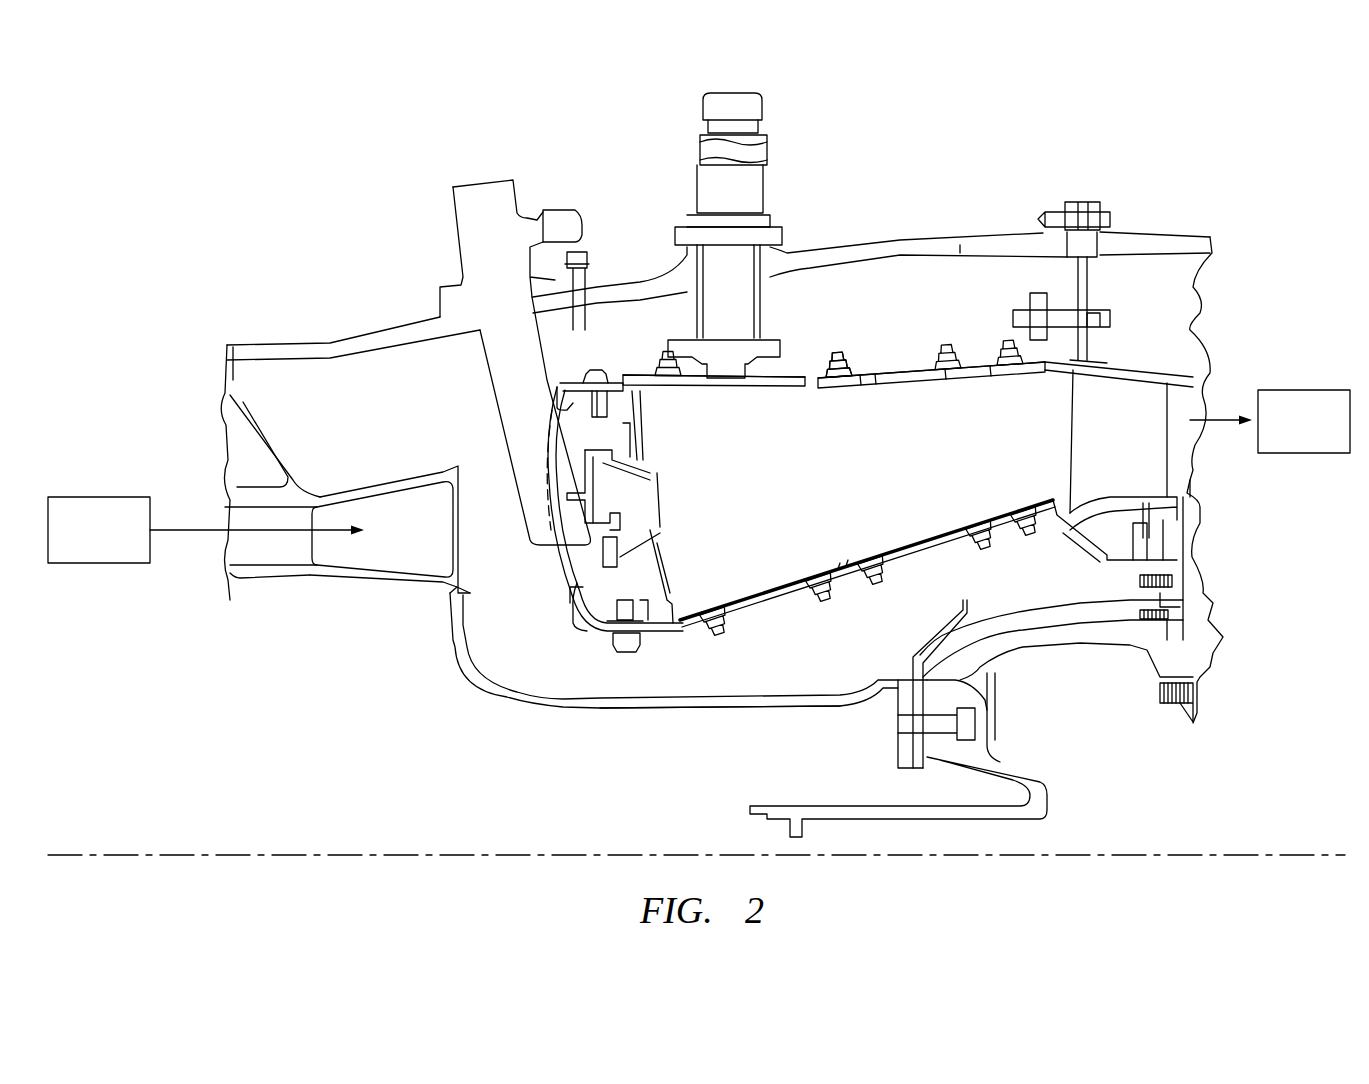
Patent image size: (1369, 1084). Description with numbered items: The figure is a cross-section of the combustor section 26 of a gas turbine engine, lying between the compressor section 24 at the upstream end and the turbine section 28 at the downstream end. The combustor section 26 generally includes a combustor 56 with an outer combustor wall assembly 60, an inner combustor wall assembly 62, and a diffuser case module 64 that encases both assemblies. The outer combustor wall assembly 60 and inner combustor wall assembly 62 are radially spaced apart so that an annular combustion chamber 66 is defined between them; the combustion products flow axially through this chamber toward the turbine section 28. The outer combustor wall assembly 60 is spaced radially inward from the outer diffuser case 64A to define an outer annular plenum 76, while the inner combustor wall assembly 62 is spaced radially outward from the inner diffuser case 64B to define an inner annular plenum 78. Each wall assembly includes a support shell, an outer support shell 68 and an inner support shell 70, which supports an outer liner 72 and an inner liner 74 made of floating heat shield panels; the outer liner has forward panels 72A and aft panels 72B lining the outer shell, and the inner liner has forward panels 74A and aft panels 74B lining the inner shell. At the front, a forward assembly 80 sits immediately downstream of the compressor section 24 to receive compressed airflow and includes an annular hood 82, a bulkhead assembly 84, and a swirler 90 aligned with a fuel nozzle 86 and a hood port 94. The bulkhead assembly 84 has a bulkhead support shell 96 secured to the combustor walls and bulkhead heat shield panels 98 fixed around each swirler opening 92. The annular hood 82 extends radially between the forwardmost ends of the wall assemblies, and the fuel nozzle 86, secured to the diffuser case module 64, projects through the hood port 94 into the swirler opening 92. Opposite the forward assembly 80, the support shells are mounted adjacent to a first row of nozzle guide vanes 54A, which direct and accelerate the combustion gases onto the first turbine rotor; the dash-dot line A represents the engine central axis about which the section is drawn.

The compressor section 24 is at (112, 543).
The combustor section 26 is at (1112, 154).
The turbine section 28 is at (1317, 433).
The first row of Nozzle Guide Vanes 54A is at (1140, 450).
The combustor 56 is at (1000, 146).
The outer combustor wall assembly 60 is at (905, 352).
The inner combustor wall assembly 62 is at (850, 600).
The diffuser case module 64 is at (891, 236).
The outer diffuser case 64A is at (960, 245).
The inner diffuser case 64B is at (707, 711).
The annular combustion chamber 66 is at (860, 483).
The outer support shell 68 is at (866, 372).
The inner support shell 70 is at (943, 538).
The outer liner 72 is at (868, 395).
The forward panels of outer liner 72A is at (767, 390).
The aft panels of outer liner 72B is at (942, 381).
The inner liner 74 is at (892, 530).
The forward panels of inner liner 74A is at (758, 587).
The aft panels of inner liner 74B is at (948, 512).
The outer annular plenum 76 is at (830, 310).
The inner annular plenum 78 is at (790, 659).
The forward assembly 80 is at (617, 531).
The annular hood 82 is at (580, 597).
The bulkhead assembly 84 is at (664, 433).
The fuel nozzle 86 is at (516, 312).
The swirler 90 is at (670, 540).
The swirler opening 92 is at (672, 462).
The hood port 94 is at (573, 570).
The bulkhead support shell 96 is at (617, 583).
The bulkhead heat shield panel 98 is at (670, 572).
The engine central axis A is at (1248, 852).